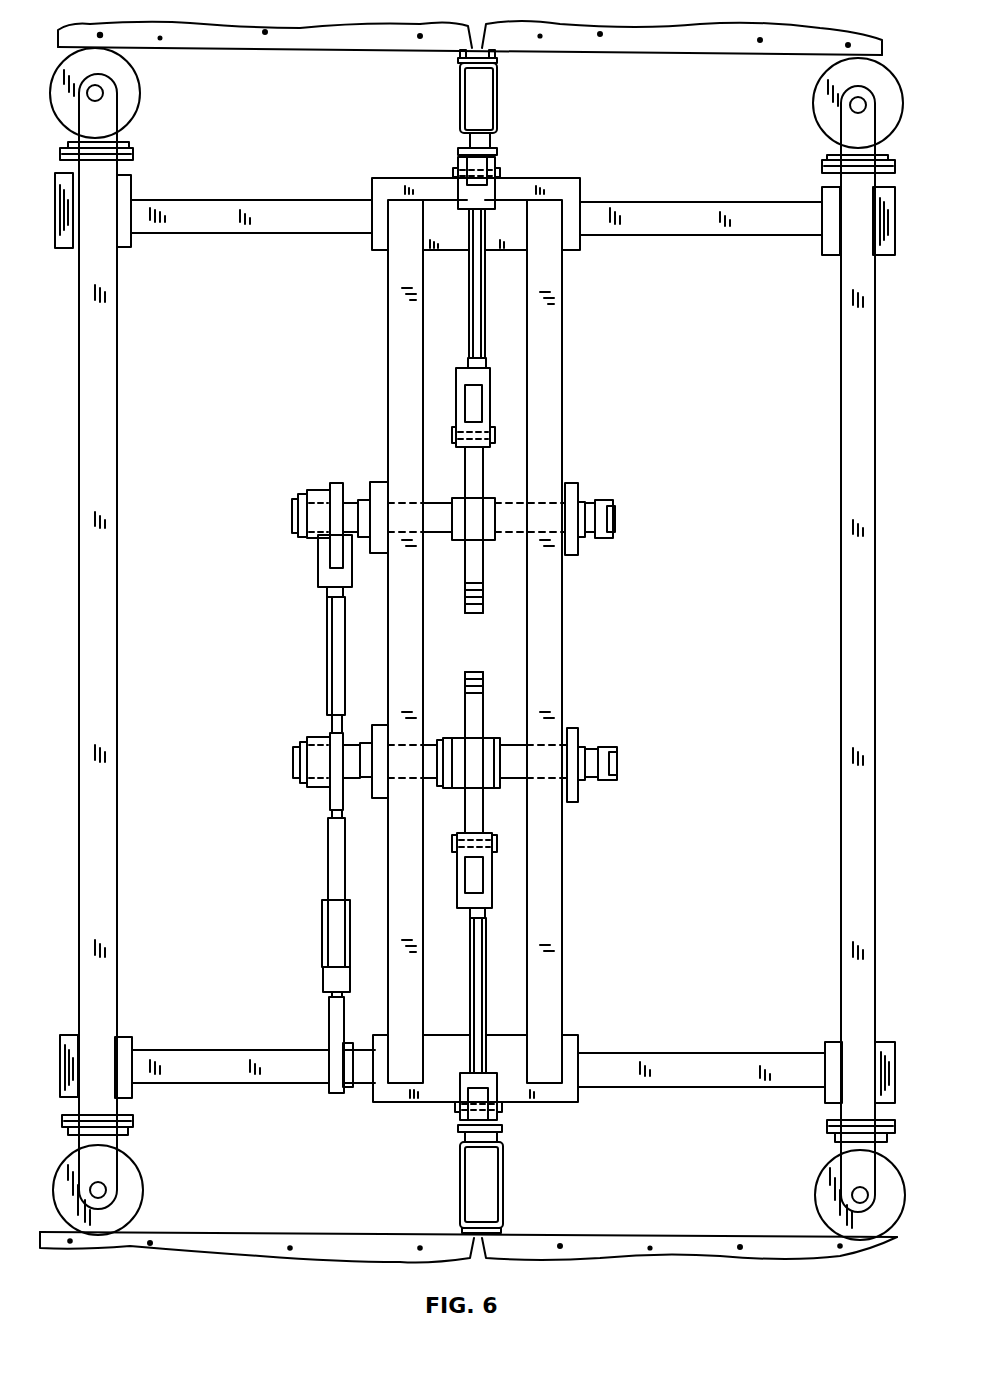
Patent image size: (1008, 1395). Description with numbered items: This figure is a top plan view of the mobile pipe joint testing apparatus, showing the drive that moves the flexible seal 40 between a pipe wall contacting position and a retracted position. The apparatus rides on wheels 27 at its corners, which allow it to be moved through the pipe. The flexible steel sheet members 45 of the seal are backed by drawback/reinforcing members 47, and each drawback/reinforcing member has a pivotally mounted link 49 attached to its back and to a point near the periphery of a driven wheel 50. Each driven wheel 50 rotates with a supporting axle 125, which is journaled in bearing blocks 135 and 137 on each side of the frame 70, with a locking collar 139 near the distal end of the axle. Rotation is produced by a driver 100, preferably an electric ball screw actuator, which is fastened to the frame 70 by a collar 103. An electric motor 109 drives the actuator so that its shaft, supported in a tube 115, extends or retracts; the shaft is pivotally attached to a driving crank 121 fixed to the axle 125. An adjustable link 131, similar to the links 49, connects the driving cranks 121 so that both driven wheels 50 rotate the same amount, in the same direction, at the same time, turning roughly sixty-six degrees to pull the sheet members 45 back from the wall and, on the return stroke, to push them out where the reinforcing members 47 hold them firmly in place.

The wheels 27 is at (133, 92).
The flexible seal 40 is at (462, 641).
The flexible steel sheet members 45 is at (497, 60).
The drawback/reinforcing members 47 is at (497, 90).
The pivotally mounted link 49 is at (481, 330).
The driven wheel 50 is at (483, 612).
The frame 70 is at (386, 350).
The driver 100 is at (280, 772).
The collar 103 is at (328, 1015).
The electric motor 109 is at (332, 943).
The tube 115 is at (328, 832).
The driving crank 121 is at (333, 482).
The axle 125 is at (292, 511).
The adjustable link 131 is at (327, 640).
The bearing block 135 is at (375, 482).
The bearing block 137 is at (575, 483).
The locking collar 139 is at (605, 500).